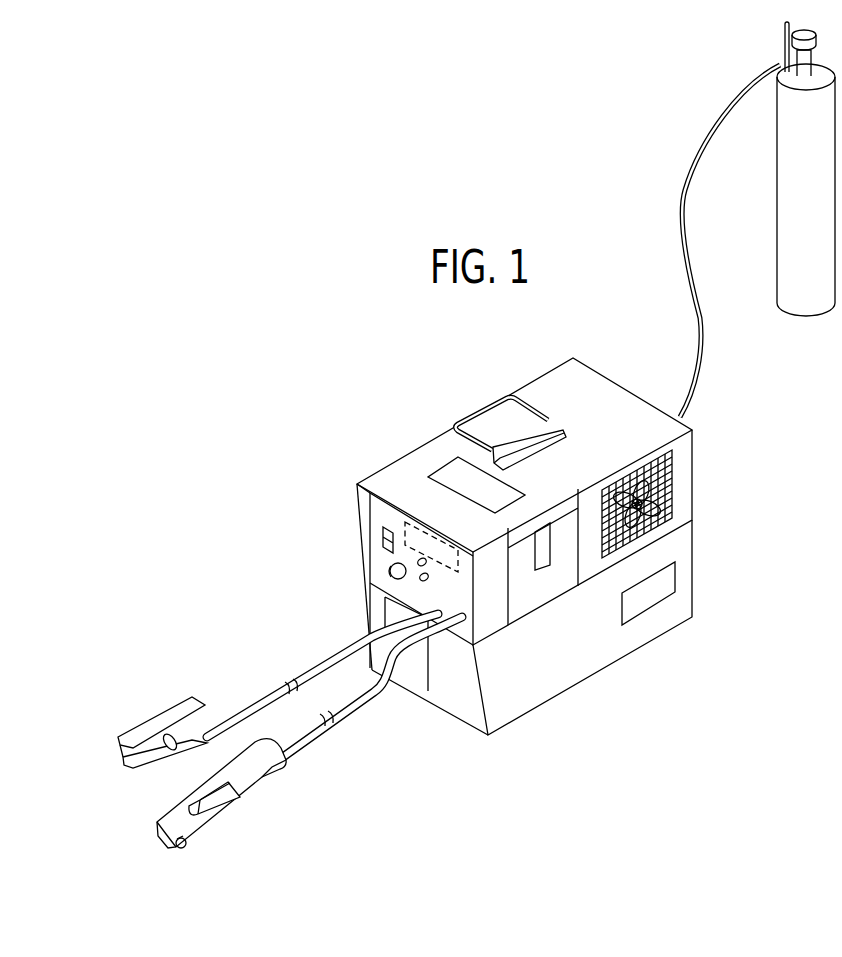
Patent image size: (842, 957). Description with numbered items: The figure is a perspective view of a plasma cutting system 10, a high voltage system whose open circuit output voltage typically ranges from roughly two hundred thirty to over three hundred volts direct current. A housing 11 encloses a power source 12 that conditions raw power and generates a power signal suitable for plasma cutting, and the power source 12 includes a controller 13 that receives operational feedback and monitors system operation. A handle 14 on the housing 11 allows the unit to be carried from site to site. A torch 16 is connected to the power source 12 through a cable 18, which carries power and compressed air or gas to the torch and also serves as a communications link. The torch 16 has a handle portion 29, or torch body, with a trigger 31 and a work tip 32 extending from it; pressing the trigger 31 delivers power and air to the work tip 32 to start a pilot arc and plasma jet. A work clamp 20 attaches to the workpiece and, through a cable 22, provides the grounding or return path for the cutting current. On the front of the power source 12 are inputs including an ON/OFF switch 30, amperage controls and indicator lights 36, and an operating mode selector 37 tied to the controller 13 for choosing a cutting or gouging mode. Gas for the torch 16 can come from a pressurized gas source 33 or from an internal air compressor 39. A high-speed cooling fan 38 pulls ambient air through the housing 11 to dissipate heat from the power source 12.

The plasma cutting system 10 is at (318, 392).
The housing 11 is at (590, 674).
The power source 12 is at (610, 388).
The controller 13 is at (408, 523).
The handle 14 is at (498, 400).
The torch 16 is at (102, 820).
The cable 18 is at (385, 686).
The work clamp 20 is at (150, 717).
The cable 22 is at (250, 707).
The handle portion 29 is at (258, 762).
The ON/OFF switch 30 is at (383, 540).
The trigger 31 is at (225, 808).
The work tip 32 is at (190, 848).
The pressurized gas source 33 is at (790, 183).
The amperage controls and indicator lights 36 is at (412, 588).
The operating mode selector 37 is at (378, 571).
The cooling fan 38 is at (673, 466).
The internal air compressor 39 is at (676, 582).